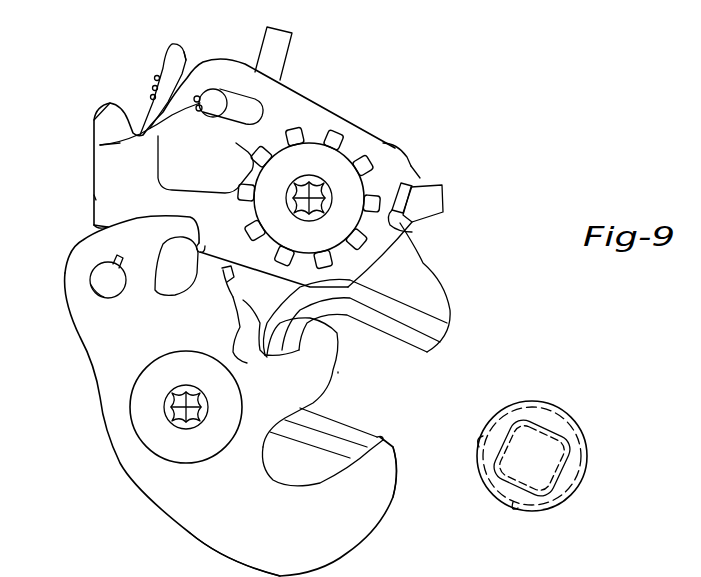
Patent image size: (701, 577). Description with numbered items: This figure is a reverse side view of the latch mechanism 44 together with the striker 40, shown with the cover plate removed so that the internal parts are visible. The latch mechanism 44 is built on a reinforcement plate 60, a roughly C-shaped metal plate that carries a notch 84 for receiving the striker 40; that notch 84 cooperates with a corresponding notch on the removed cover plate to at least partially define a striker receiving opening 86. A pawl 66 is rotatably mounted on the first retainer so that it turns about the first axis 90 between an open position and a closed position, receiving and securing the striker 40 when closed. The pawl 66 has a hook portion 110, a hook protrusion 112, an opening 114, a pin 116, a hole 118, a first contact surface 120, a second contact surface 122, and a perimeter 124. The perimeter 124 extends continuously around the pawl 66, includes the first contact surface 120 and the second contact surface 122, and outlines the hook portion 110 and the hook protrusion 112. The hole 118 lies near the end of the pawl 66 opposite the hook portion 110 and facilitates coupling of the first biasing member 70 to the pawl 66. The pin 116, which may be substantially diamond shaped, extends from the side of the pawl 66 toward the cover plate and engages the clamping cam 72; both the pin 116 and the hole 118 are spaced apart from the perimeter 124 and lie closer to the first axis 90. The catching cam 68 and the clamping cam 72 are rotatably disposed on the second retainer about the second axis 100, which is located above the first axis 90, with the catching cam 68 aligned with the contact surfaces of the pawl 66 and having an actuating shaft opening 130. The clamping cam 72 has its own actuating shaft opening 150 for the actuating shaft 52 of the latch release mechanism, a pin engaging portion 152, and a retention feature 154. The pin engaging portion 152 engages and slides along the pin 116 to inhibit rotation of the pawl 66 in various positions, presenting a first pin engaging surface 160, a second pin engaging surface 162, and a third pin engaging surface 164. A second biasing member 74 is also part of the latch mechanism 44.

The striker 40 is at (588, 457).
The latch mechanism 44 is at (135, 64).
The actuating shaft 52 is at (214, 104).
The reinforcement plate 60 is at (445, 287).
The pawl 66 is at (215, 553).
The catching cam 68 is at (148, 101).
The first biasing member 70 is at (185, 58).
The clamping cam 72 is at (100, 162).
The second biasing member 74 is at (420, 192).
The notch 84 is at (382, 437).
The striker receiving opening 86 is at (377, 387).
The first axis 90 is at (176, 418).
The second axis 100 is at (323, 188).
The hook portion 110 is at (399, 465).
The hook protrusion 112 is at (340, 345).
The opening 114 is at (293, 451).
The pin 116 is at (156, 296).
The hole 118 is at (91, 285).
The first contact surface 120 is at (256, 364).
The second contact surface 122 is at (229, 283).
The perimeter 124 is at (100, 377).
The actuating shaft opening 130 is at (100, 145).
The actuating shaft opening 150 is at (195, 191).
The pin engaging portion 152 is at (142, 179).
The retention feature 154 is at (412, 232).
The first pin engaging surface 160 is at (203, 244).
The second pin engaging surface 162 is at (101, 226).
The third pin engaging surface 164 is at (95, 197).